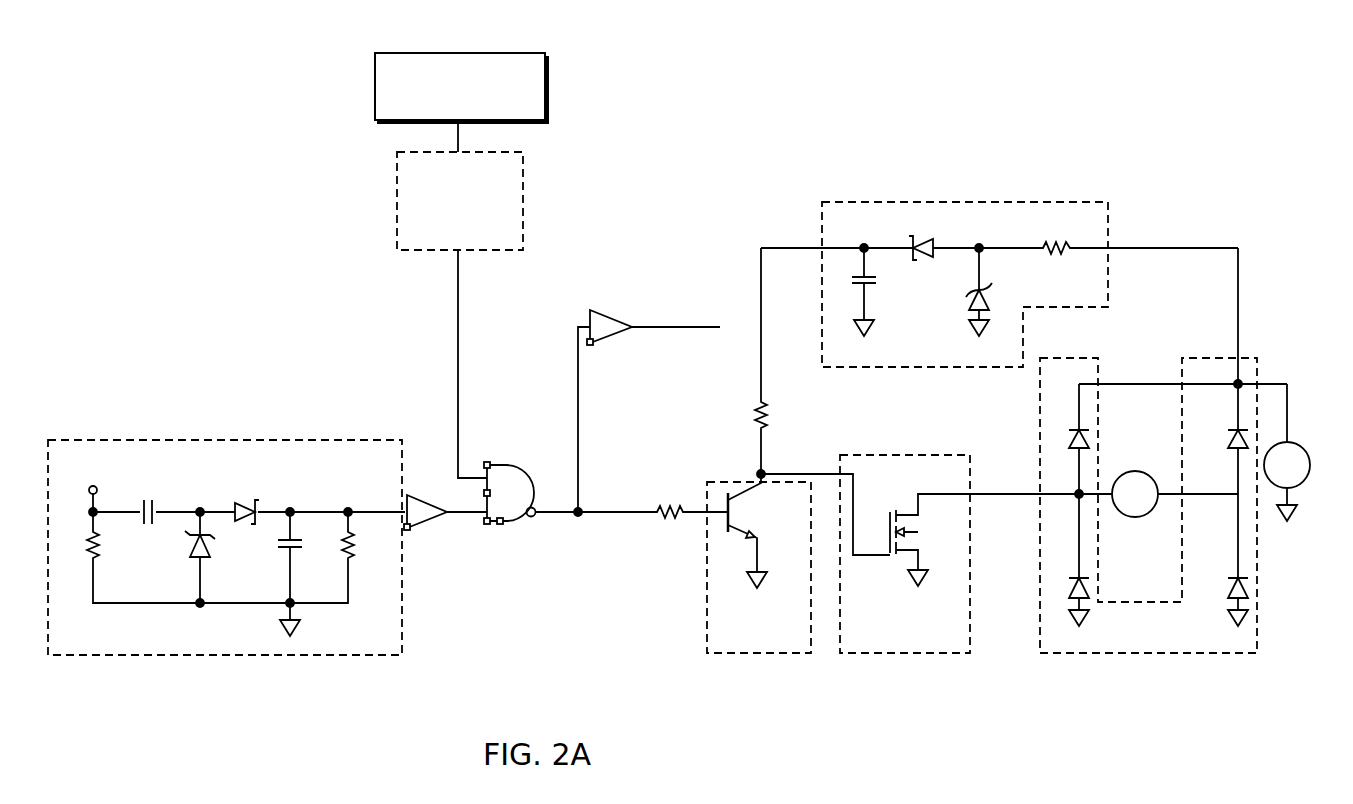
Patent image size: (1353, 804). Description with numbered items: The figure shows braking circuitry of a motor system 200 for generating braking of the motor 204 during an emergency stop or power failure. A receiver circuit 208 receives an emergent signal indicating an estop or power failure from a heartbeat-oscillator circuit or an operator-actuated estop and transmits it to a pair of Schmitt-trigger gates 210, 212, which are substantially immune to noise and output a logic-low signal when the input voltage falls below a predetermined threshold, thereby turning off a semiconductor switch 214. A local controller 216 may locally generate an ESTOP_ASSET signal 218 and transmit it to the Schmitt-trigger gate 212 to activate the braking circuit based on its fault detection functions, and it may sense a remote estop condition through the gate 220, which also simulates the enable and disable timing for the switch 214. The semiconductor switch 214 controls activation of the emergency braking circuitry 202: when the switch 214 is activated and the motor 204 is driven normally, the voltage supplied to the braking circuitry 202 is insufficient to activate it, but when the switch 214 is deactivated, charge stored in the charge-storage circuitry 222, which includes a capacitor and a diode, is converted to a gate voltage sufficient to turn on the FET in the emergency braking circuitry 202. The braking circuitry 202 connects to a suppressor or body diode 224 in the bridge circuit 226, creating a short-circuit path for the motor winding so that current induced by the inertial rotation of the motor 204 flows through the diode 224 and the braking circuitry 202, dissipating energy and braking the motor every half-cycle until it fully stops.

The motor system 200 is at (1127, 124).
The emergency braking circuitry 202 is at (907, 653).
The motor 204 is at (1135, 430).
The receiver circuit 208 is at (225, 655).
The Schmitt-trigger gate 210 is at (432, 520).
The Schmitt-trigger gate 212 is at (510, 524).
The semiconductor switch 214 is at (758, 653).
The local controller 216 is at (547, 82).
The ESTOP_ASSET signal 218 is at (524, 200).
The gate 220 is at (578, 306).
The charge-storage circuitry 222 is at (958, 198).
The suppressor or body diode 224 is at (1255, 588).
The bridge circuit 226 is at (1185, 527).